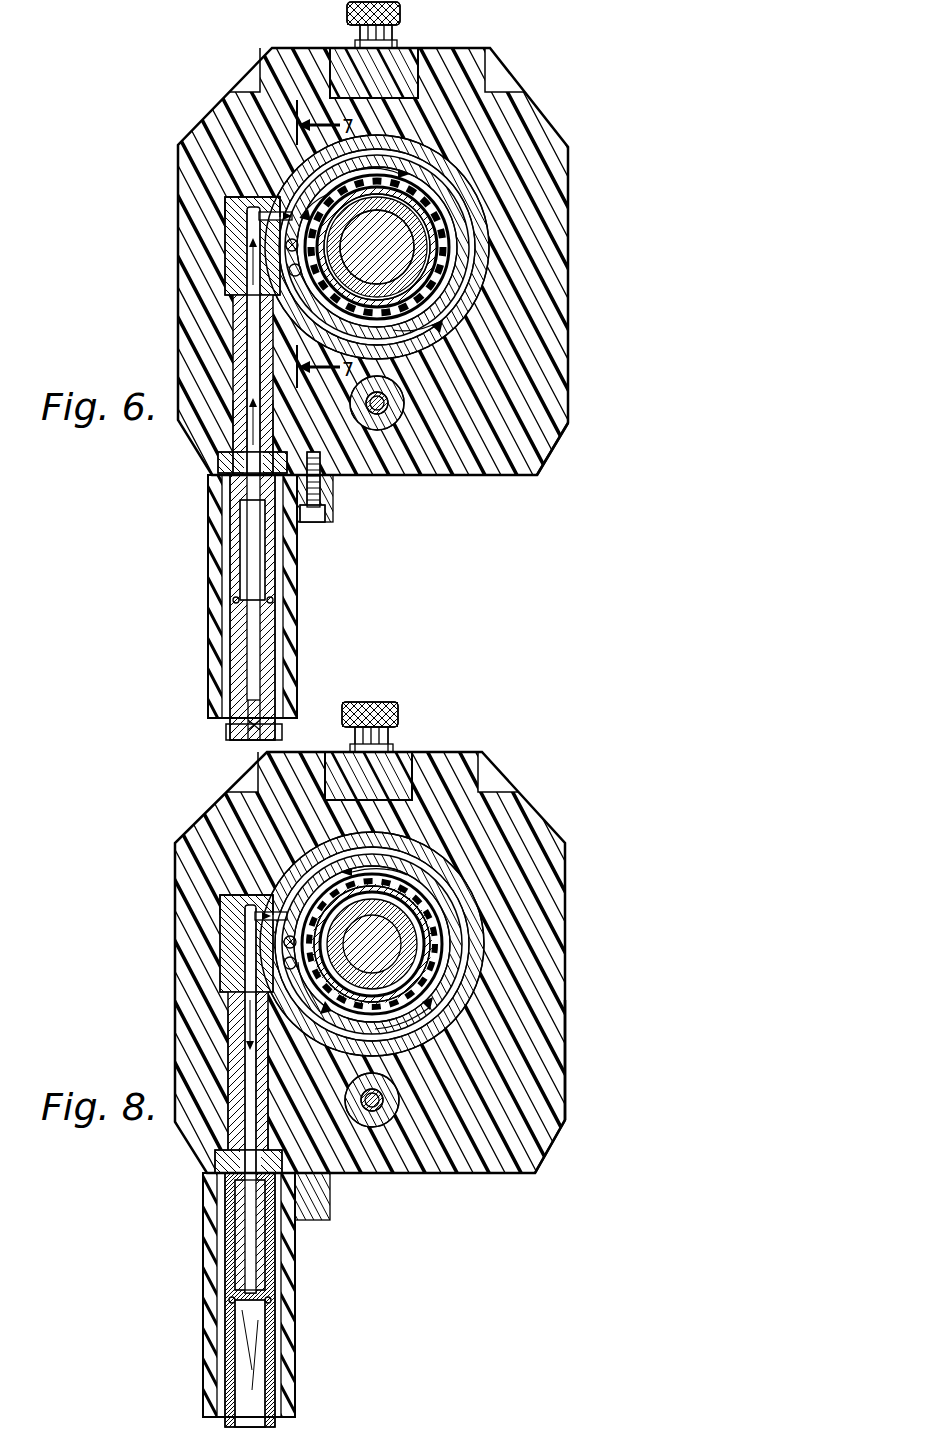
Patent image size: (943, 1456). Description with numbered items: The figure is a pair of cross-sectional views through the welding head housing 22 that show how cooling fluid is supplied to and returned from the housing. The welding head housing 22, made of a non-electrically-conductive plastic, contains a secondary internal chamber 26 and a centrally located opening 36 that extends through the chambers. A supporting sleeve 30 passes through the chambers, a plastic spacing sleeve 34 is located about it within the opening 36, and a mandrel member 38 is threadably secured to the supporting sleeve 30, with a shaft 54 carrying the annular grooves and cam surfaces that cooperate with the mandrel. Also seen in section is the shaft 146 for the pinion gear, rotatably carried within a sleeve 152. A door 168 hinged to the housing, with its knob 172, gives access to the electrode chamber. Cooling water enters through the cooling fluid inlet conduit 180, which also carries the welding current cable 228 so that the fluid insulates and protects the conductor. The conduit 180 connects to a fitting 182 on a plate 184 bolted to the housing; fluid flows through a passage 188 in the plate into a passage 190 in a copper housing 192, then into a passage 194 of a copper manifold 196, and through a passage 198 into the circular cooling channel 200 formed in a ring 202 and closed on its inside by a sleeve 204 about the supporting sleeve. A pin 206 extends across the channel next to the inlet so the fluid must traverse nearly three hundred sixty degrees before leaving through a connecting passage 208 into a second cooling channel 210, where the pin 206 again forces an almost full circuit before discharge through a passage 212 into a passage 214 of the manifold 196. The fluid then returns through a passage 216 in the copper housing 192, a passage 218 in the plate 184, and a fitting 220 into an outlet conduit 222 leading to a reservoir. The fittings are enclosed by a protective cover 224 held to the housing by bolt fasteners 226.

In FIG. 6, the welding head housing 22 is at (530, 115).
In FIG. 8, the welding head housing 22 is at (535, 808).
In FIG. 6, the secondary internal chamber 26 is at (435, 335).
In FIG. 8, the secondary internal chamber 26 is at (475, 985).
In FIG. 6, the supporting sleeve 30 is at (440, 228).
In FIG. 8, the supporting sleeve 30 is at (430, 935).
In FIG. 6, the spacing sleeve 34 is at (477, 293).
In FIG. 8, the spacing sleeve 34 is at (470, 963).
In FIG. 6, the centrally located opening 36 is at (430, 195).
In FIG. 8, the centrally located opening 36 is at (430, 905).
In FIG. 8, the mandrel member 38 is at (420, 890).
In FIG. 6, the shaft 54 is at (420, 352).
In FIG. 8, the shaft 54 is at (483, 1007).
In FIG. 6, the shaft 146 is at (382, 425).
In FIG. 8, the shaft 146 is at (395, 1130).
In FIG. 6, the sleeve 152 is at (448, 478).
In FIG. 8, the sleeve 152 is at (365, 1135).
In FIG. 6, the door 168 is at (405, 55).
In FIG. 8, the door 168 is at (400, 760).
In FIG. 6, the knob 172 is at (347, 9).
In FIG. 8, the knob 172 is at (398, 705).
In FIG. 6, the cooling fluid inlet conduit 180 is at (232, 740).
In FIG. 6, the fitting 182 is at (232, 522).
In FIG. 6, the plate 184 is at (230, 470).
In FIG. 8, the plate 184 is at (217, 1157).
In FIG. 6, the passage 188 is at (243, 485).
In FIG. 6, the passage 190 is at (243, 323).
In FIG. 6, the copper housing 192 is at (243, 420).
In FIG. 8, the copper housing 192 is at (237, 1018).
In FIG. 6, the passage 194 is at (244, 253).
In FIG. 6, the copper manifold 196 is at (227, 227).
In FIG. 8, the copper manifold 196 is at (243, 993).
In FIG. 6, the passage 198 is at (227, 203).
In FIG. 6, the cooling channel 200 is at (400, 250).
In FIG. 6, the ring 202 is at (540, 395).
In FIG. 8, the ring 202 is at (520, 1060).
In FIG. 6, the sleeve 204 is at (250, 108).
In FIG. 8, the sleeve 204 is at (255, 805).
In FIG. 6, the pin 206 is at (286, 247).
In FIG. 8, the pin 206 is at (284, 942).
In FIG. 6, the connecting passage 208 is at (290, 271).
In FIG. 8, the connecting passage 208 is at (284, 963).
In FIG. 8, the second cooling channel 210 is at (520, 1092).
In FIG. 8, the passage 212 is at (237, 893).
In FIG. 8, the passage 214 is at (243, 905).
In FIG. 8, the passage 216 is at (237, 1053).
In FIG. 8, the passage 218 is at (237, 1180).
In FIG. 8, the fitting 220 is at (227, 1235).
In FIG. 8, the conduit 222 is at (275, 1352).
In FIG. 6, the protective cover 224 is at (297, 592).
In FIG. 8, the protective cover 224 is at (295, 1285).
In FIG. 6, the bolt fasteners 226 is at (325, 522).
In FIG. 6, the cable 228 is at (270, 741).